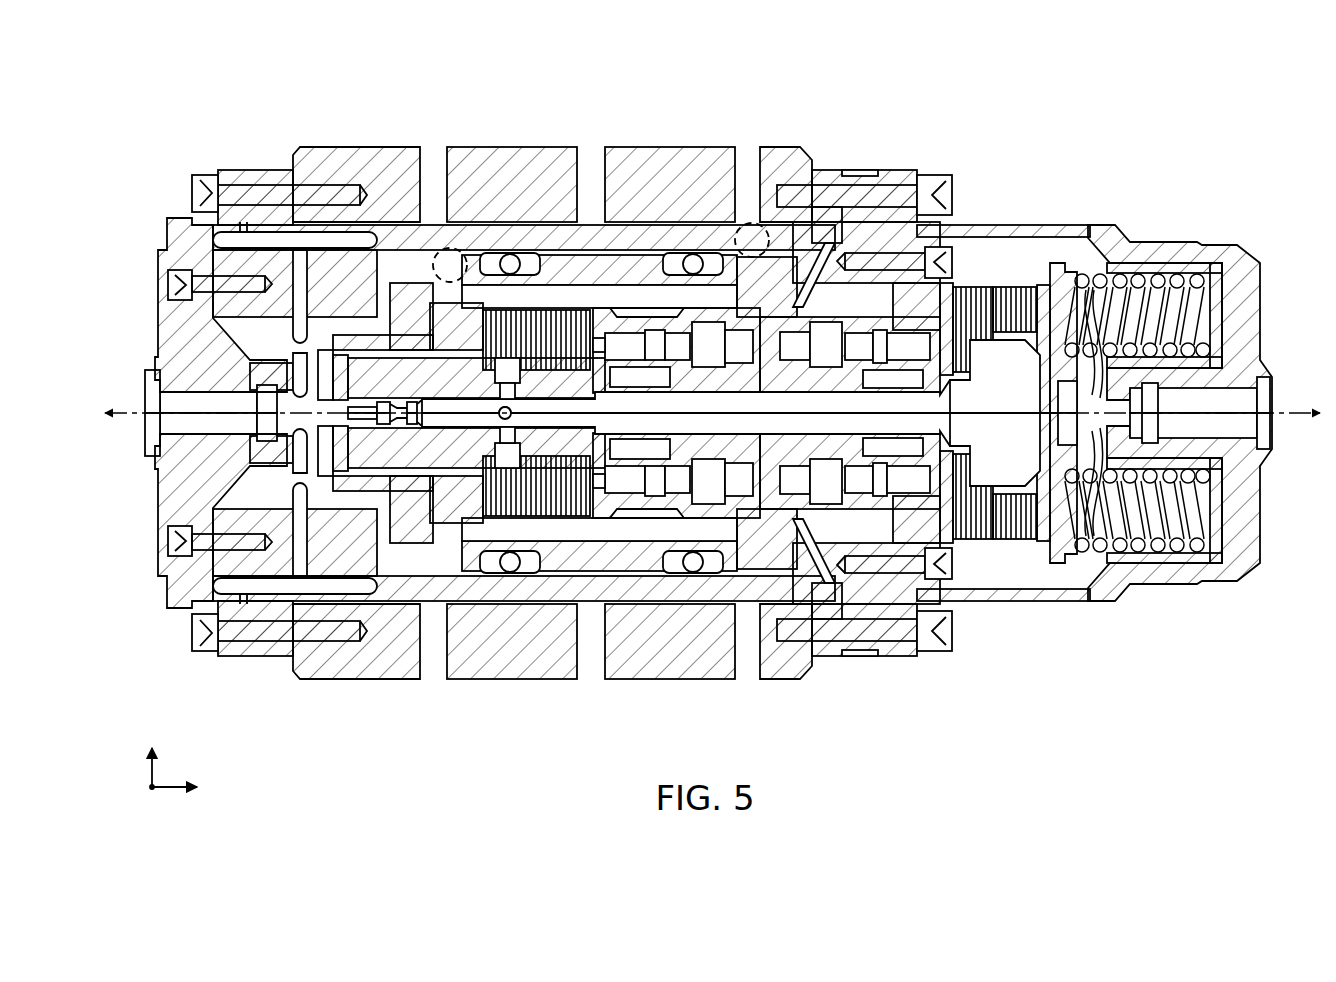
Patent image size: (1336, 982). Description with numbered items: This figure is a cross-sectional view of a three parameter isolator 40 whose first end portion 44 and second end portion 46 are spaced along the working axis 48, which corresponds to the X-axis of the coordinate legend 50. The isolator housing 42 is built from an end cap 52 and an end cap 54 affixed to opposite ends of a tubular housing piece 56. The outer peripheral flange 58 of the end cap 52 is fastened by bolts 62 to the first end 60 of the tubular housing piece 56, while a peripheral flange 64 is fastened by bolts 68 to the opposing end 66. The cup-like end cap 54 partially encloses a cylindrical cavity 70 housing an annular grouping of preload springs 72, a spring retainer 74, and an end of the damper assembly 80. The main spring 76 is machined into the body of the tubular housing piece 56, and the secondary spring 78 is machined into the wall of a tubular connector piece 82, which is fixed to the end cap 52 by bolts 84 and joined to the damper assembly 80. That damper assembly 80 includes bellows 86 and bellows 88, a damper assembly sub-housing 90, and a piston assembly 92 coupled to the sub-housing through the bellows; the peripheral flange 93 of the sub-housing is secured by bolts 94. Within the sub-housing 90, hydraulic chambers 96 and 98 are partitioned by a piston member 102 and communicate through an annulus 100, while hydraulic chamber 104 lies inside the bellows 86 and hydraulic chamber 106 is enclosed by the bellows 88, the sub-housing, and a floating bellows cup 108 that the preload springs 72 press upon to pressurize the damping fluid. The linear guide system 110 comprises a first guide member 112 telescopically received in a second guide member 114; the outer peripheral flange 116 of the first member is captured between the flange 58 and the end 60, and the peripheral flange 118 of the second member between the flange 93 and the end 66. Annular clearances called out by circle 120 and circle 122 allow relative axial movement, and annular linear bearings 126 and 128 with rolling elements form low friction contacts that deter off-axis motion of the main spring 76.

The three parameter isolator 40 is at (225, 110).
The isolator housing 42 is at (922, 668).
The first end portion 44 is at (158, 332).
The second end portion 46 is at (1262, 302).
The working axis 48 is at (1293, 413).
The coordinate legend 50 is at (150, 767).
The end cap 52 is at (160, 495).
The end cap 54 is at (1253, 510).
The tubular housing piece 56 is at (330, 692).
The outer peripheral flange 58 is at (238, 660).
The first end 60 is at (290, 616).
The bolts 62 is at (192, 192).
The peripheral flange 64 is at (900, 653).
The opposing end 66 is at (817, 647).
The bolts 68 is at (903, 193).
The cylindrical cavity 70 is at (984, 581).
The preload springs 72 is at (1157, 282).
The spring retainer 74 is at (1220, 278).
The main spring 76 is at (812, 695).
The secondary spring 78 is at (243, 232).
The damper assembly 80 is at (780, 305).
The tubular connector piece 82 is at (373, 272).
The bolts 84 is at (170, 282).
The bellows 86 is at (513, 310).
The bellows 88 is at (980, 287).
The damper assembly sub-housing 90 is at (668, 317).
The piston assembly 92 is at (723, 460).
The peripheral flange 93 is at (862, 212).
The bolts 94 is at (922, 258).
The hydraulic chamber 96 is at (706, 413).
The hydraulic chamber 98 is at (758, 413).
The annulus 100 is at (775, 515).
The piston member 102 is at (800, 323).
The hydraulic chamber 104 is at (518, 503).
The hydraulic chamber 106 is at (998, 394).
The floating bellows cup 108 is at (1065, 267).
The linear guide system 110 is at (693, 232).
The first guide member 112 is at (487, 237).
The second guide member 114 is at (577, 270).
The outer peripheral flange 116 is at (278, 172).
The peripheral flange 118 is at (822, 175).
The circle 120 is at (760, 223).
The circle 122 is at (450, 247).
The annular linear bearing 126 is at (507, 572).
The annular linear bearing 128 is at (688, 572).